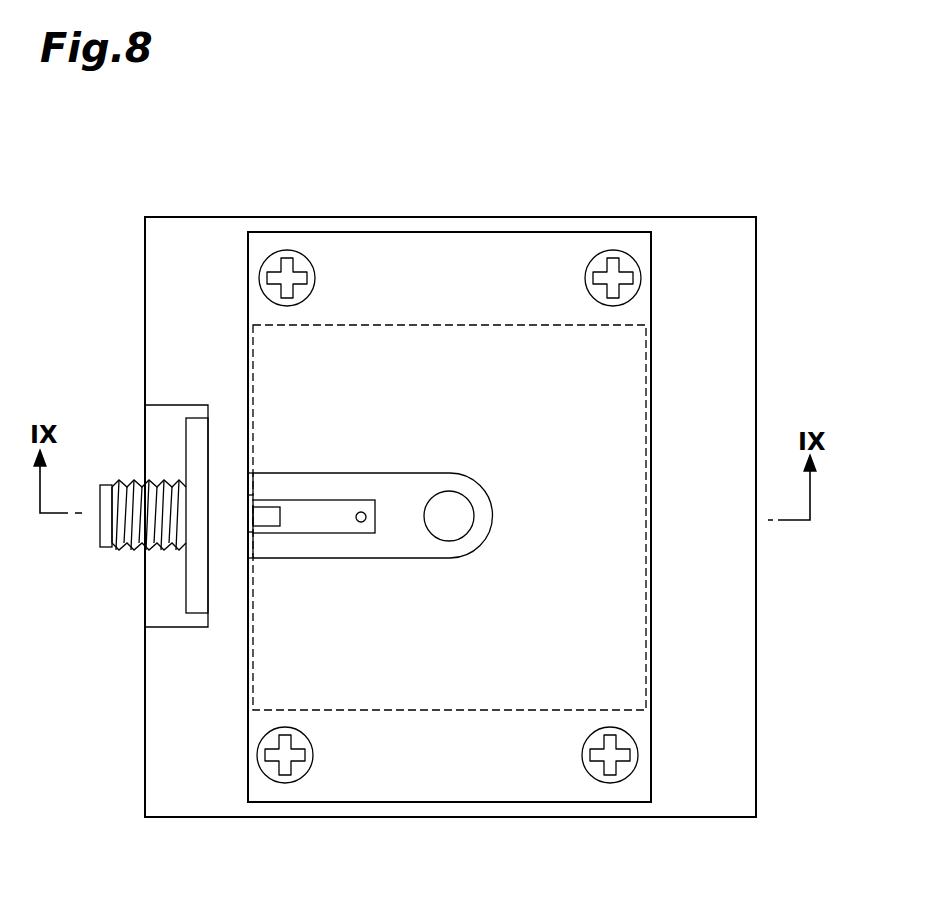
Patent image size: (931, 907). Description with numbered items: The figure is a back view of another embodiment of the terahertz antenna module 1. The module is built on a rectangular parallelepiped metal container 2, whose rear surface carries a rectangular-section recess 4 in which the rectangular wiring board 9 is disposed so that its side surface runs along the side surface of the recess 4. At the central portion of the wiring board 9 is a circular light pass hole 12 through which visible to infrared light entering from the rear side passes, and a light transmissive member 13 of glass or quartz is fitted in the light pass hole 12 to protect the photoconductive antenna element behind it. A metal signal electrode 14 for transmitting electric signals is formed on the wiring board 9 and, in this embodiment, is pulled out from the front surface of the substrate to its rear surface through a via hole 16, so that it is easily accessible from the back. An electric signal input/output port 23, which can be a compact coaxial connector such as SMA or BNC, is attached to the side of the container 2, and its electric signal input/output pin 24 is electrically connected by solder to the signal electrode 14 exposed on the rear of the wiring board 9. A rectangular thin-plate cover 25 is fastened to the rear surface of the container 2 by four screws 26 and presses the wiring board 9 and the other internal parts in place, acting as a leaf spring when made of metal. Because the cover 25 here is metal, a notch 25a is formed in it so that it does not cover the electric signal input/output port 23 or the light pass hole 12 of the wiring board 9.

The terahertz antenna module 1 is at (763, 173).
The container 2 is at (158, 592).
The recess (second portion) 4 is at (650, 455).
The wiring board 9 is at (248, 552).
The light pass hole 12 is at (427, 520).
The light transmissive member 13 is at (448, 507).
The signal electrode 14 is at (317, 522).
The via hole 16 is at (359, 512).
The electric signal input/output port 23 is at (130, 483).
The electric signal input/output pin 24 is at (265, 515).
The cover 25 is at (733, 597).
The notch 25a is at (478, 520).
The screws 26 is at (290, 250).